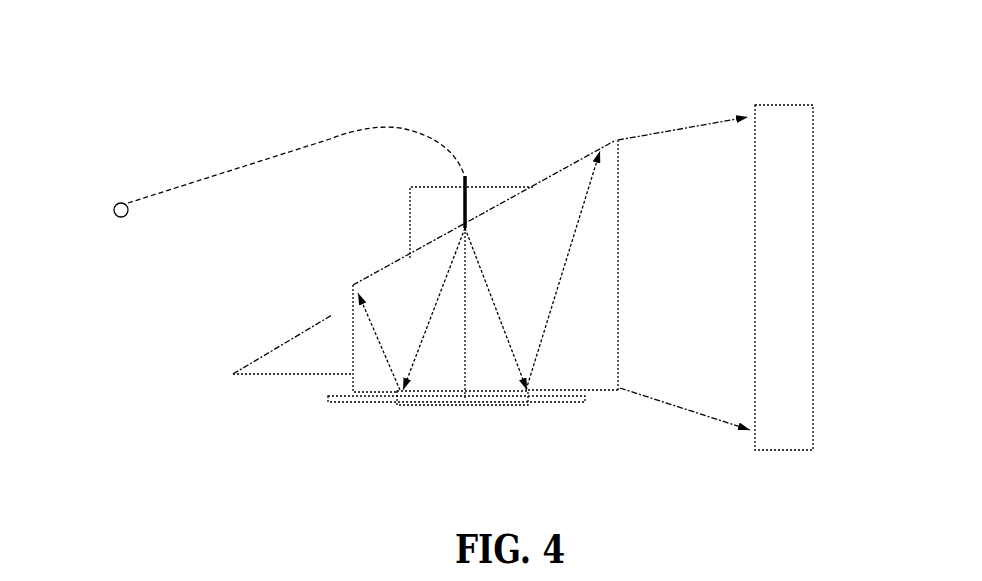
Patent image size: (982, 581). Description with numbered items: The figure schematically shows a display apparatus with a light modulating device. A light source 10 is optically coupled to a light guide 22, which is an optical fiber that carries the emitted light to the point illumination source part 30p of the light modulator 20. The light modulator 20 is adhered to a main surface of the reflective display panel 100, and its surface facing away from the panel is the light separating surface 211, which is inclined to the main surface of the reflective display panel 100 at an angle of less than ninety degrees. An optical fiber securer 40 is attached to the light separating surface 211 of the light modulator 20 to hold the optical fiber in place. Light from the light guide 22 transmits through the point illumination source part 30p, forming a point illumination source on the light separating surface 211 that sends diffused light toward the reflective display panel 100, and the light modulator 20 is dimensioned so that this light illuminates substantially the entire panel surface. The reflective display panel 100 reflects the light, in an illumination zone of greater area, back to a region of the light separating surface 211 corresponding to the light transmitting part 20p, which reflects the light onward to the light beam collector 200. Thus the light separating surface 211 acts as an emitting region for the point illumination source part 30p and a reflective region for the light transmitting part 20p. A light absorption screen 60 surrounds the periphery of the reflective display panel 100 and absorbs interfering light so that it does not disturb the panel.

The light source 10 is at (113, 210).
The light guide 22 is at (273, 155).
The light modulator 20 is at (432, 110).
The optical fiber securer 40 is at (428, 213).
The light separating surface 211 is at (567, 165).
The light transmitting part 20p is at (547, 185).
The point illumination source part 30p is at (469, 230).
The light beam collector 200 is at (795, 244).
The light absorption screen 60 is at (345, 407).
The reflective display panel 100 is at (499, 406).